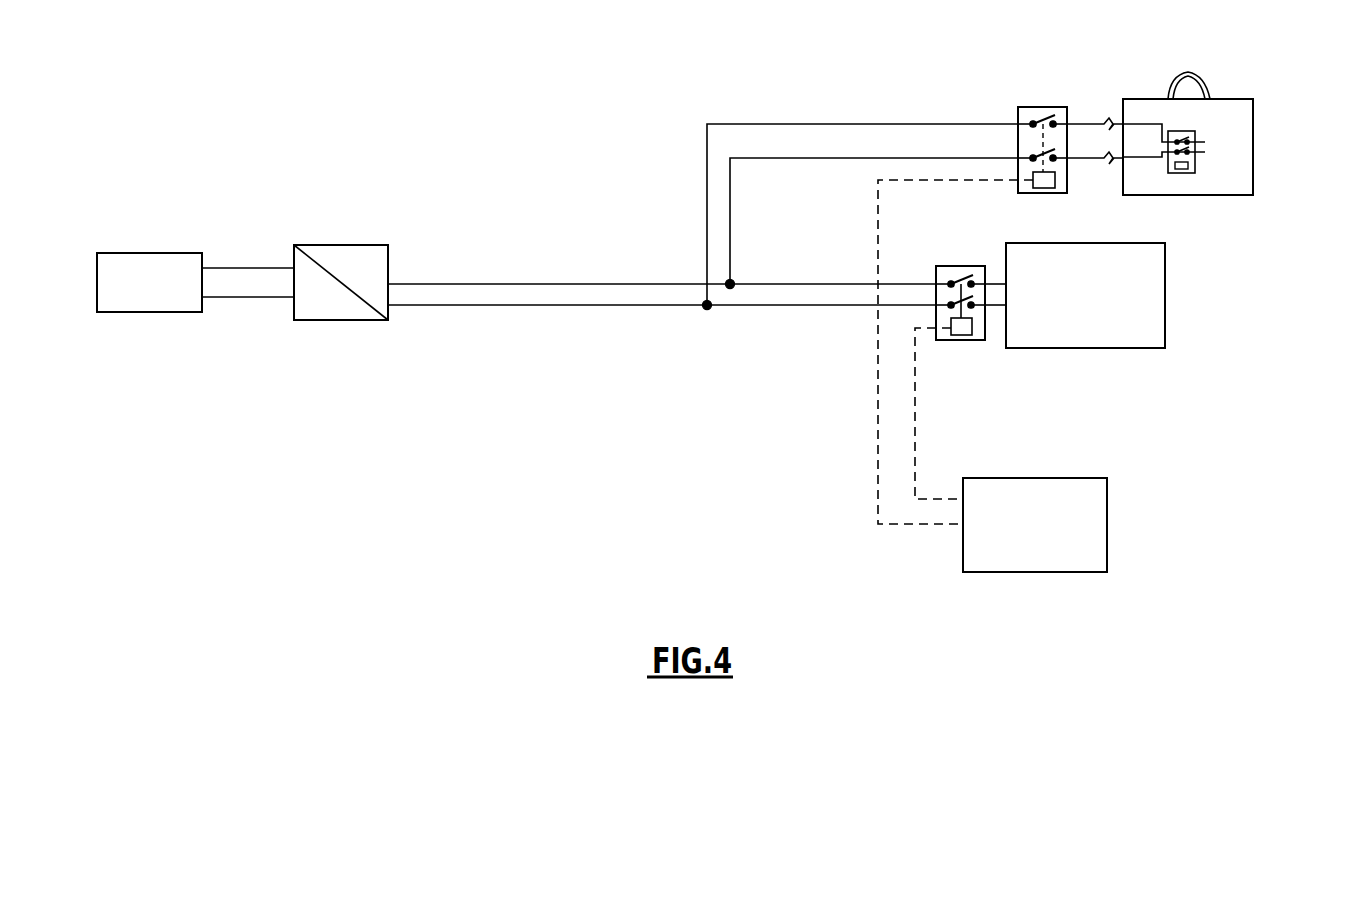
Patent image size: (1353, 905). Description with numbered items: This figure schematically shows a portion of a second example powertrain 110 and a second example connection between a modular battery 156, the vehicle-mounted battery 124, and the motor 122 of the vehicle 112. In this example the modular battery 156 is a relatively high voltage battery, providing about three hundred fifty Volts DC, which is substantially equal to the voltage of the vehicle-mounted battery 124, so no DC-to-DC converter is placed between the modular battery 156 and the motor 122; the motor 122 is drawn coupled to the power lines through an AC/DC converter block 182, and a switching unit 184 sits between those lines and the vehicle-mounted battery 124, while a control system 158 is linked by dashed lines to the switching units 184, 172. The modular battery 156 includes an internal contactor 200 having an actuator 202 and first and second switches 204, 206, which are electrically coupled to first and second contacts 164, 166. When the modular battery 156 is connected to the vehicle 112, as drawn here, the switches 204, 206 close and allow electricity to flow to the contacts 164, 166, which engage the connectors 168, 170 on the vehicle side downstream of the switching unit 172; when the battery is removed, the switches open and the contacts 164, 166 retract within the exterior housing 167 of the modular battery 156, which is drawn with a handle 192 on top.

The powertrain 110 is at (356, 441).
The vehicle 112 is at (582, 163).
The motor 122 is at (168, 253).
The vehicle-mounted battery 124 is at (1165, 275).
The modular battery 156 is at (1262, 130).
The control system 158 is at (1107, 510).
The first contact 164 is at (1113, 122).
The second contact 166 is at (1113, 162).
The exterior housing 167 is at (1253, 165).
The connector 168 is at (1108, 120).
The connector 170 is at (1106, 165).
The charging relay switch 172 is at (1030, 100).
The AC/DC inverter 182 is at (360, 245).
The battery relay switch 184 is at (972, 343).
The connector handle 192 is at (1206, 90).
The internal contactor 200 is at (1168, 126).
The actuator 202 is at (1183, 169).
The first switch 204 is at (1182, 140).
The second switch 206 is at (1193, 153).